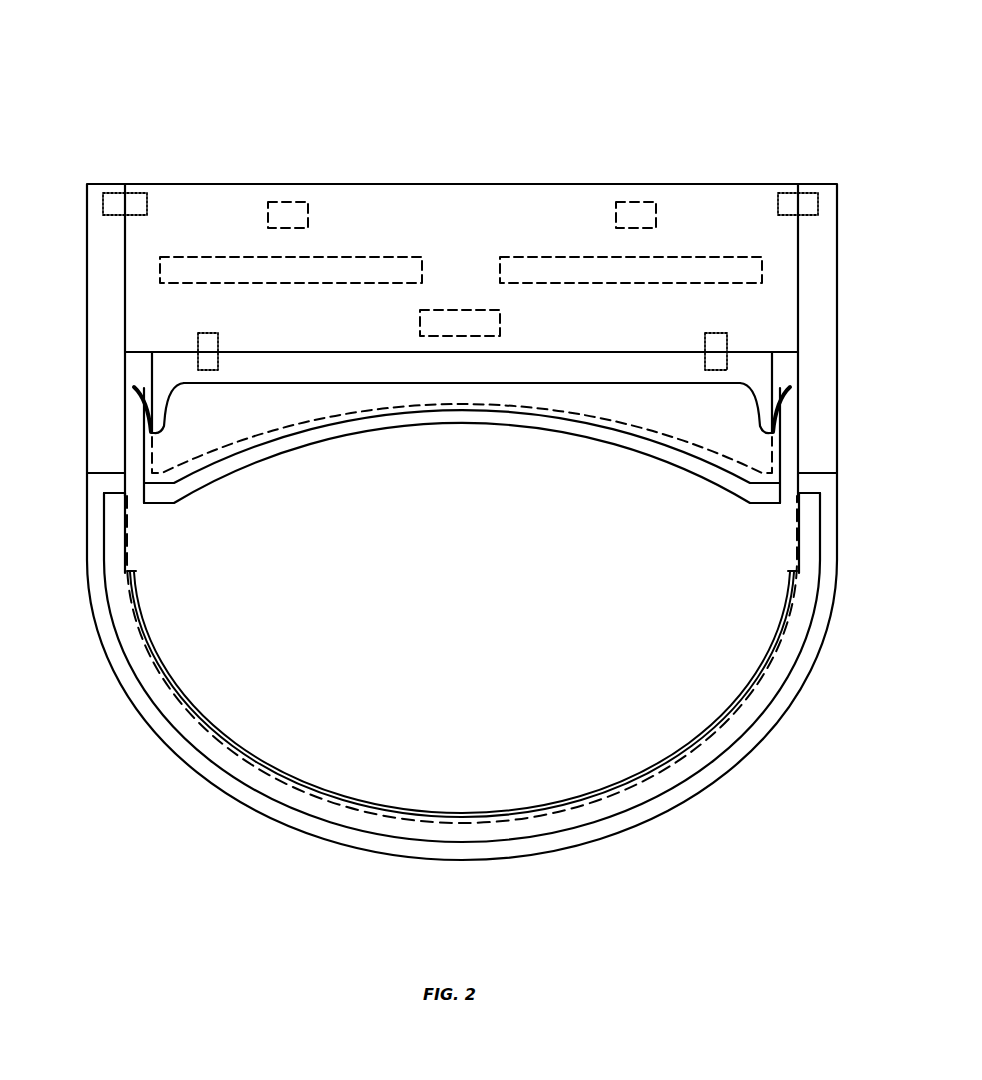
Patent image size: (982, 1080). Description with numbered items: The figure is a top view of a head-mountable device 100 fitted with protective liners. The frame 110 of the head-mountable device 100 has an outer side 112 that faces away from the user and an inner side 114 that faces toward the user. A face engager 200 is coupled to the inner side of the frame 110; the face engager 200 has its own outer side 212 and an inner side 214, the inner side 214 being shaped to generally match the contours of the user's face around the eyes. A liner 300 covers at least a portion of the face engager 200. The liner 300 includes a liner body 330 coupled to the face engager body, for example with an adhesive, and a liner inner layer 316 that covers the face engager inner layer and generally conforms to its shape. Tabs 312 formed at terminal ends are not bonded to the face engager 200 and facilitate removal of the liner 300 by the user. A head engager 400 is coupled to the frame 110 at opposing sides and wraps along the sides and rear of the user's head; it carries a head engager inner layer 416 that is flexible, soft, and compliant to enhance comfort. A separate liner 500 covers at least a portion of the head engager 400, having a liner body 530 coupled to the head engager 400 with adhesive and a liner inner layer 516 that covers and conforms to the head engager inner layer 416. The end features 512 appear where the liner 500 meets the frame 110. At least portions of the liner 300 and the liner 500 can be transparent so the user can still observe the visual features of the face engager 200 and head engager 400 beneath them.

The head-mountable device 100 is at (118, 58).
The frame 110 is at (187, 183).
The outer side 112 is at (460, 183).
The inner side 114 is at (783, 355).
The face engager 200 is at (157, 363).
The outer side 212 is at (558, 352).
The inner side 214 is at (560, 413).
The liner 300 is at (143, 447).
The tabs 312 is at (738, 392).
The liner inner layer 316 is at (460, 420).
The liner body 330 is at (215, 430).
The head engager 400 is at (106, 257).
The head engager inner layer 416 is at (510, 822).
The liner 500 is at (113, 613).
The band end caps 512 is at (92, 493).
The liner inner layer 516 is at (462, 815).
The liner body 530 is at (113, 552).